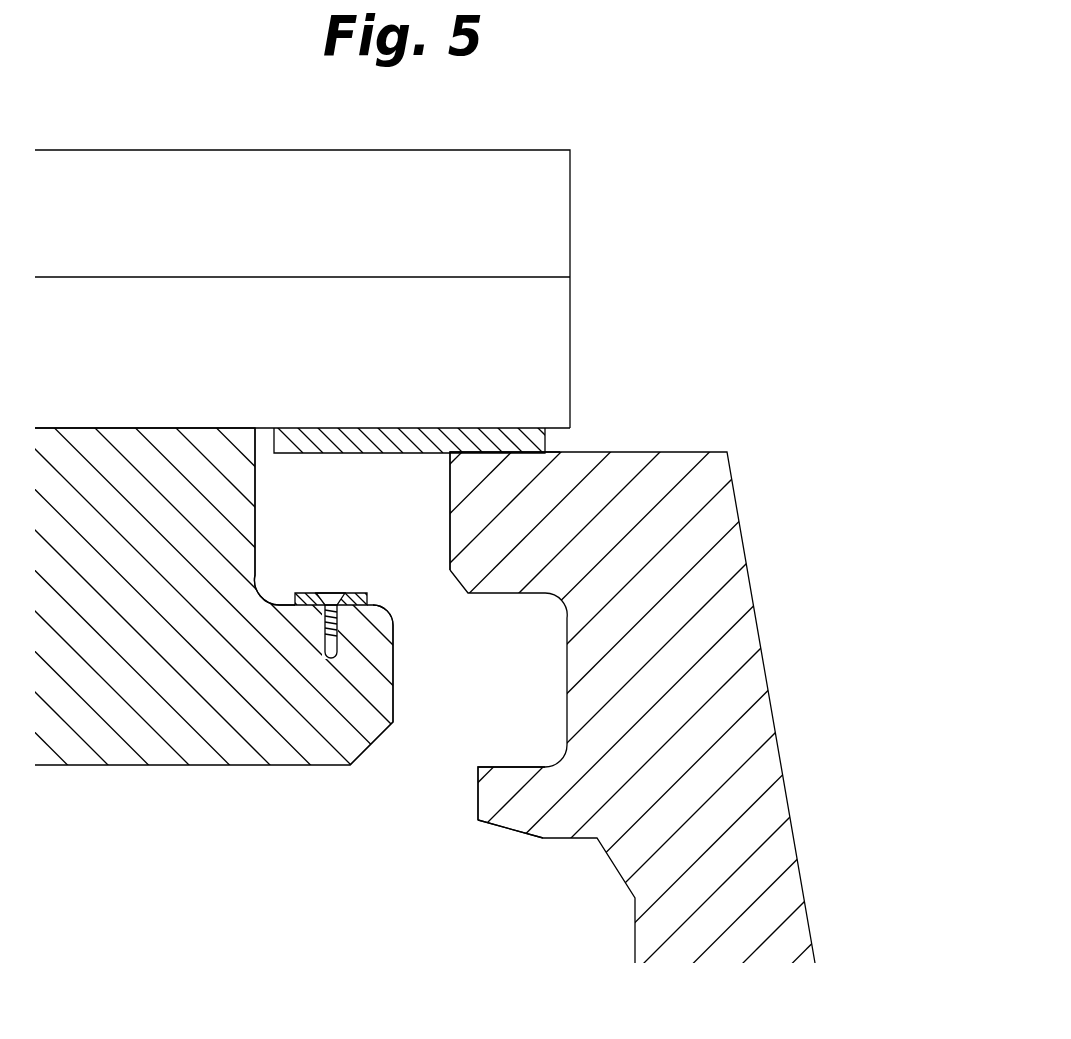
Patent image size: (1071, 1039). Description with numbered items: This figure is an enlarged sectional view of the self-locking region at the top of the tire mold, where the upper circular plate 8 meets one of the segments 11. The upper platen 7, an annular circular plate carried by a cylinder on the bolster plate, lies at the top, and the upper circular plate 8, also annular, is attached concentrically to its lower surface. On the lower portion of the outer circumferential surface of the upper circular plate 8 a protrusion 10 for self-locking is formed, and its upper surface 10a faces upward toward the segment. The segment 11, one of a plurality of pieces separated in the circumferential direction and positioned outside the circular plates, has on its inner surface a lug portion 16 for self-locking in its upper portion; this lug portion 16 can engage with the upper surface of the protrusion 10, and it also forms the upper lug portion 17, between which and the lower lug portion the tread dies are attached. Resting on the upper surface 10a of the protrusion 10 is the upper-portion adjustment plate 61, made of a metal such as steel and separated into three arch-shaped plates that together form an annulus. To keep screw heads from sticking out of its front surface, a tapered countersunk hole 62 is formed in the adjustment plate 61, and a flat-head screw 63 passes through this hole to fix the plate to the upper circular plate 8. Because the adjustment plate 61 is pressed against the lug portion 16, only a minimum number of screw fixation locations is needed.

The upper platen 7 is at (552, 343).
The upper circular plate 8 is at (120, 738).
The protrusion 10 is at (333, 728).
The upper surface 10a is at (283, 598).
The segment 11 is at (778, 590).
The lug portion 16 is at (488, 508).
The upper lug portion 17 is at (517, 808).
The upper-portion adjustment plate 61 is at (368, 601).
The tapered countersunk hole 62 is at (347, 597).
The flat-head screw 63 is at (330, 597).